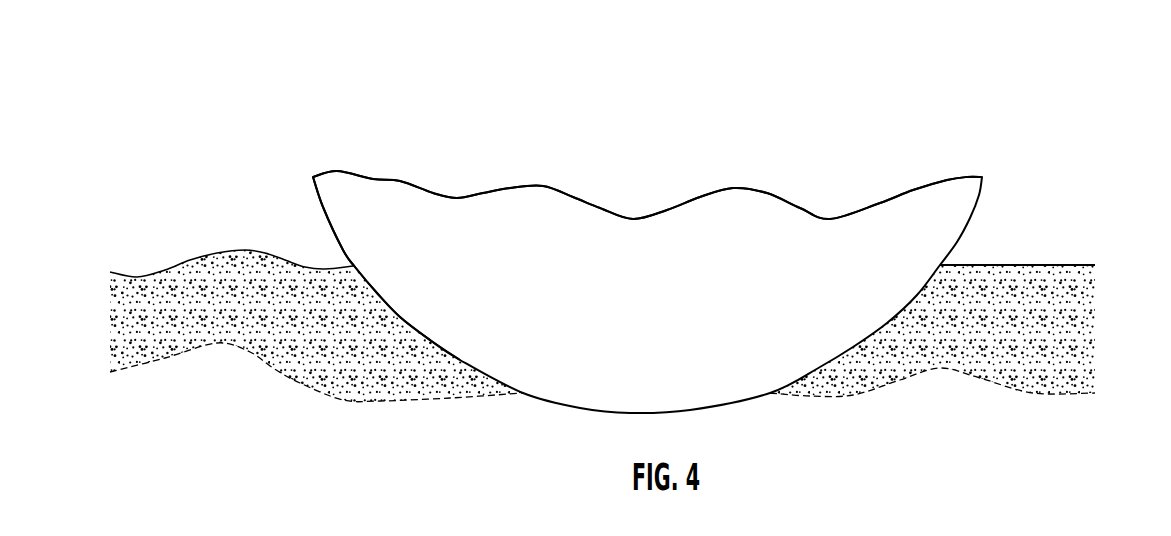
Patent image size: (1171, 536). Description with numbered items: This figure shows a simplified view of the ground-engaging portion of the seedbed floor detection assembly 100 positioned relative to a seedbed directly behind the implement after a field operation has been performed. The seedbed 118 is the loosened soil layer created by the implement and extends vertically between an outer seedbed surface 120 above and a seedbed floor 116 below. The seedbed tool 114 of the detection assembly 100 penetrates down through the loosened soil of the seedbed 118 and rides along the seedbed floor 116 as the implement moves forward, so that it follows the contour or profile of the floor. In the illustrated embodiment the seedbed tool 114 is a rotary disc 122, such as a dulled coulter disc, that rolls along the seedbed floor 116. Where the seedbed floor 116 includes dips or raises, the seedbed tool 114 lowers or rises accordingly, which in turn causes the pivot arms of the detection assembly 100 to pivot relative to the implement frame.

The detection assembly 100 is at (292, 78).
The seedbed tool 114 is at (306, 238).
The seedbed floor 116 is at (1040, 397).
The seedbed 118 is at (300, 325).
The outer seedbed surface 120 is at (1010, 264).
The rotary disc 122 is at (332, 205).